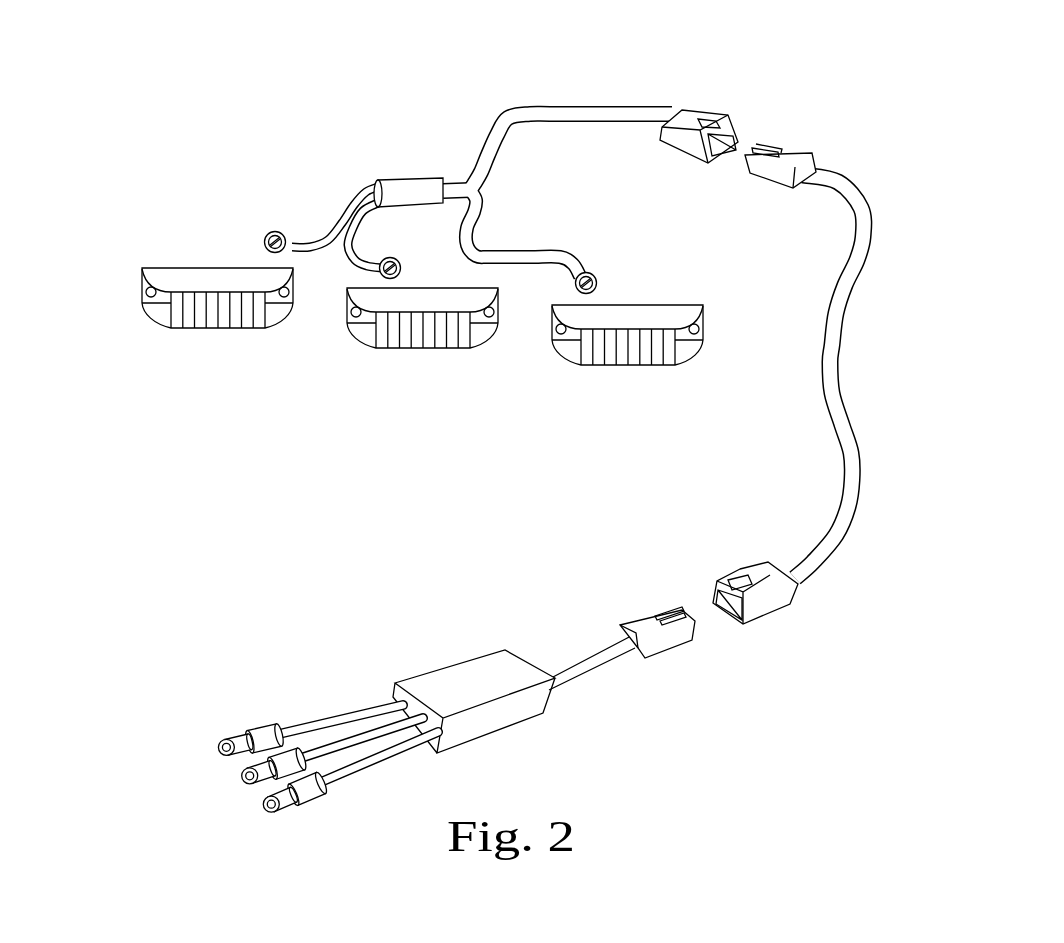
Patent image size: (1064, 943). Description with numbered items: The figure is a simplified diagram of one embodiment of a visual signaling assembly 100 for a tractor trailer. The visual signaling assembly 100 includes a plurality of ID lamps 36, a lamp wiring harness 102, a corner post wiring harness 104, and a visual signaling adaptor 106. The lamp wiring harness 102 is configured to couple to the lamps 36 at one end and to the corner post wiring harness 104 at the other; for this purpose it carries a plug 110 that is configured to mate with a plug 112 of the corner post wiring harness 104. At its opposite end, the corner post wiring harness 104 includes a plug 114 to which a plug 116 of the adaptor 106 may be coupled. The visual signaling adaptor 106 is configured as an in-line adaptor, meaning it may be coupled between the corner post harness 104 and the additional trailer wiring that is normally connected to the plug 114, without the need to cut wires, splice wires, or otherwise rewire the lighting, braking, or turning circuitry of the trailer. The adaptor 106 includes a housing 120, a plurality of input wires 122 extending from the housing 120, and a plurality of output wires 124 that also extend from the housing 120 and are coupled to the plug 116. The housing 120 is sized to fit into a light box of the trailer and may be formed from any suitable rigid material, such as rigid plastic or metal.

The visual signaling assembly 100 is at (948, 110).
The lamp wiring harness 102 is at (560, 106).
The corner post wiring harness 104 is at (848, 310).
The visual signaling adaptor 106 is at (430, 655).
The plug 110 is at (692, 112).
The plug 112 is at (795, 153).
The plug 114 is at (757, 570).
The plug 116 is at (643, 617).
The housing 120 is at (492, 660).
The input wires 122 is at (245, 715).
The output wires 124 is at (594, 674).
The ID lamps 36 is at (185, 275).